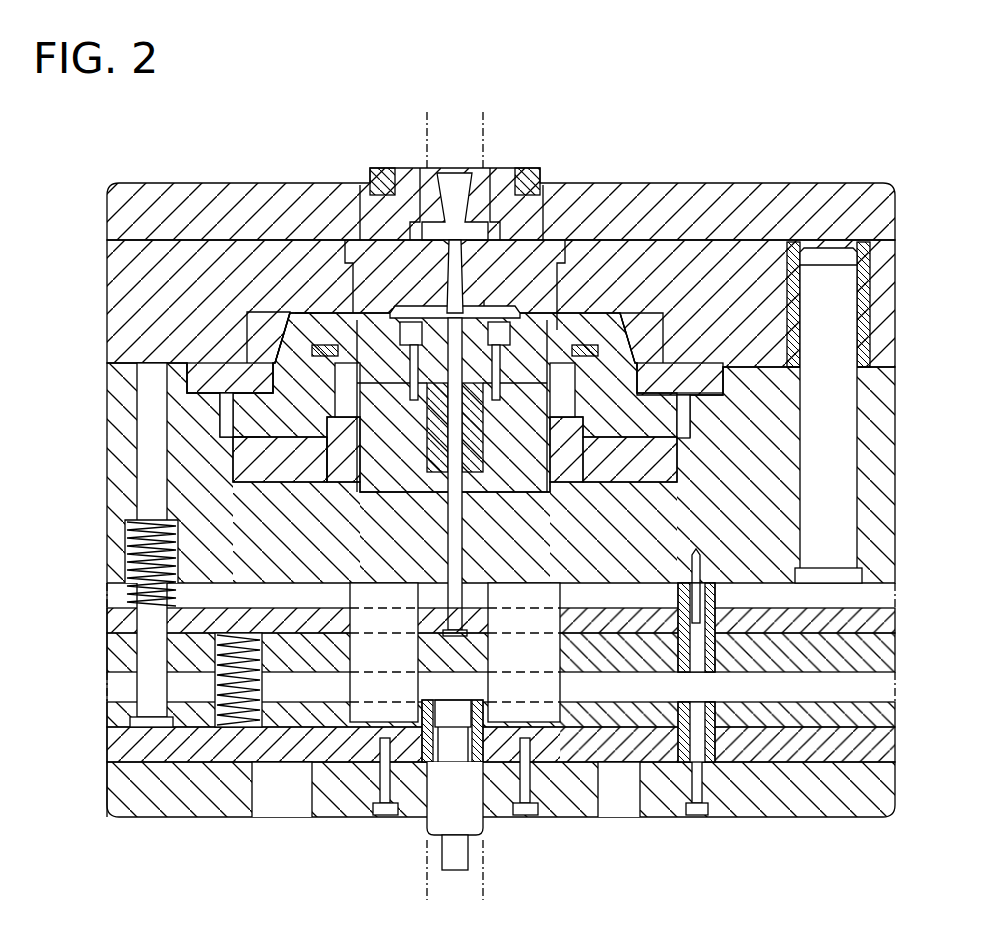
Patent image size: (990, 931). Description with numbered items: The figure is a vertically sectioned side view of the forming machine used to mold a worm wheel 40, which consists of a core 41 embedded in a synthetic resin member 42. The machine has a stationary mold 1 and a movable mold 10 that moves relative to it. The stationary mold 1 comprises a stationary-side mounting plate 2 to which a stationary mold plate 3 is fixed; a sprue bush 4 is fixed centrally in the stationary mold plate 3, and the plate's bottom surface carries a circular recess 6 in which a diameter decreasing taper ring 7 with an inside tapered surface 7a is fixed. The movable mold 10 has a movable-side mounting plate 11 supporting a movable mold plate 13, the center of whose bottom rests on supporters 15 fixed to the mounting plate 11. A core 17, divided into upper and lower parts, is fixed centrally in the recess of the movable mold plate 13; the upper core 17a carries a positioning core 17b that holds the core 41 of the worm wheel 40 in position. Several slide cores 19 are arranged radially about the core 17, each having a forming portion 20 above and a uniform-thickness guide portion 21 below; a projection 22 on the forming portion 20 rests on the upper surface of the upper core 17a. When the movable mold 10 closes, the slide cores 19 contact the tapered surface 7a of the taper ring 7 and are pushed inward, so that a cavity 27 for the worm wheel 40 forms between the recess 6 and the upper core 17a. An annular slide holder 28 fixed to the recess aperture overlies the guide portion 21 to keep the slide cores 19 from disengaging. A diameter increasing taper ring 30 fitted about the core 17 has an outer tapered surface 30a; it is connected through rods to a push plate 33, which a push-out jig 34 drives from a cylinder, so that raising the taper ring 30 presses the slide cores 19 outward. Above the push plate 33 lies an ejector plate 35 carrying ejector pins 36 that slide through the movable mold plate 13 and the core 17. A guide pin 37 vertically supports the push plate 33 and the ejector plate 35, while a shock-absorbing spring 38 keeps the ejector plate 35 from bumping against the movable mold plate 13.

The stationary mold 1 is at (104, 181).
The stationary-side mounting plate 2 is at (163, 193).
The stationary mold plate 3 is at (122, 288).
The sprue bush 4 is at (382, 200).
The circular recess 6 is at (310, 332).
The diameter decreasing taper ring 7 is at (262, 332).
The tapered surface 7a is at (290, 327).
The movable mold 10 is at (106, 795).
The movable-side mounting plate 11 is at (140, 800).
The movable mold plate 13 is at (110, 466).
The supporters 15 is at (383, 748).
The core 17 is at (562, 383).
The upper core 17a is at (557, 325).
The positioning core 17b is at (484, 300).
The slide cores 19 is at (222, 408).
The forming portion 20 is at (280, 373).
The guide portion 21 is at (232, 438).
The projection 22 is at (332, 345).
The cavity 27 is at (538, 300).
The slide holder 28 is at (662, 345).
The diameter increasing taper ring 30 is at (325, 455).
The tapered surface 30a is at (257, 422).
The push plate 33 is at (108, 735).
The push-out jig 34 is at (437, 812).
The ejector plate 35 is at (108, 650).
The ejector pins 36 is at (520, 722).
The guide pin 37 is at (696, 700).
The shock-absorbing spring 38 is at (112, 594).
The worm wheel 40 is at (413, 300).
The core 41 is at (455, 235).
The synthetic resin member 42 is at (432, 300).